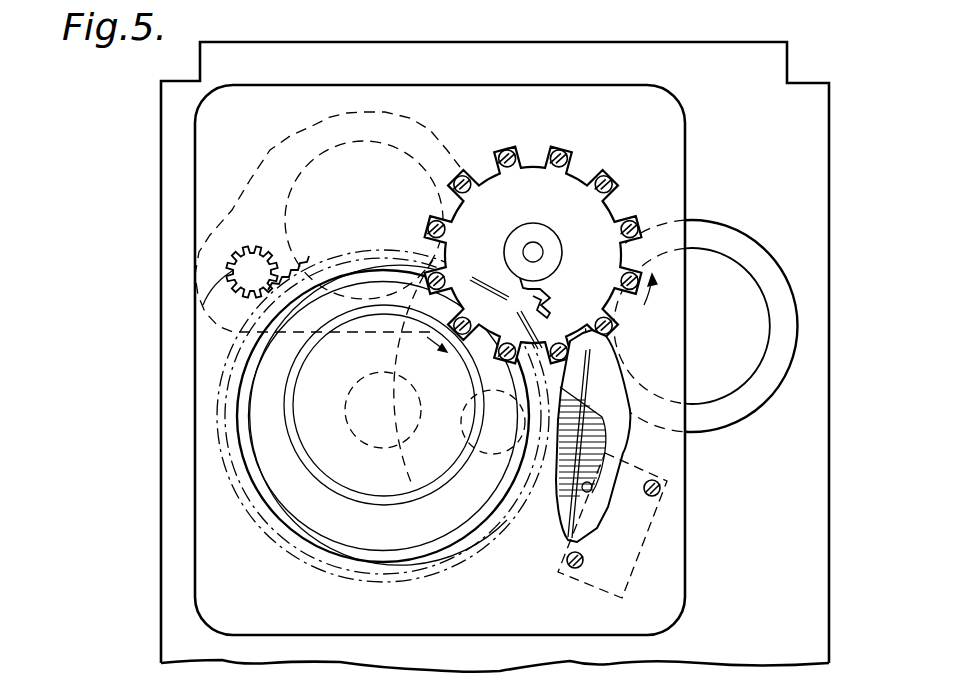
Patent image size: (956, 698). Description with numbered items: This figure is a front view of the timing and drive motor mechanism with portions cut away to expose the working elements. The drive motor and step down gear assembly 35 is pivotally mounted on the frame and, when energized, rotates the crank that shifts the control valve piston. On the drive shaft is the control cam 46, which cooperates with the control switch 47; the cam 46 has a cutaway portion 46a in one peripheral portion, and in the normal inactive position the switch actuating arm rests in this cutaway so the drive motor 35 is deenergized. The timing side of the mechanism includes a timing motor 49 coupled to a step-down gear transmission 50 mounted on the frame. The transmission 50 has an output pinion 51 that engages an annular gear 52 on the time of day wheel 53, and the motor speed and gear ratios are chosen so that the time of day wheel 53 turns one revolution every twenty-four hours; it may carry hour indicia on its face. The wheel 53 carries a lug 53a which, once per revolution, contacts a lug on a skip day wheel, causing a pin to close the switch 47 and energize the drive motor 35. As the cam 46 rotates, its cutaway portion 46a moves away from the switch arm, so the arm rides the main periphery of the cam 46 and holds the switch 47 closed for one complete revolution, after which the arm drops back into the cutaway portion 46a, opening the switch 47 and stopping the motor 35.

The drive motor and step down gear assembly 35 is at (724, 224).
The control cam 46 is at (549, 510).
The cutaway portion 46a is at (532, 522).
The control switch 47 is at (668, 537).
The timing motor 49 is at (390, 163).
The step-down gear transmission 50 is at (232, 210).
The output pinion 51 is at (240, 302).
The annular gear 52 is at (282, 544).
The time of day wheel 53 is at (345, 455).
The lug 53a is at (419, 400).